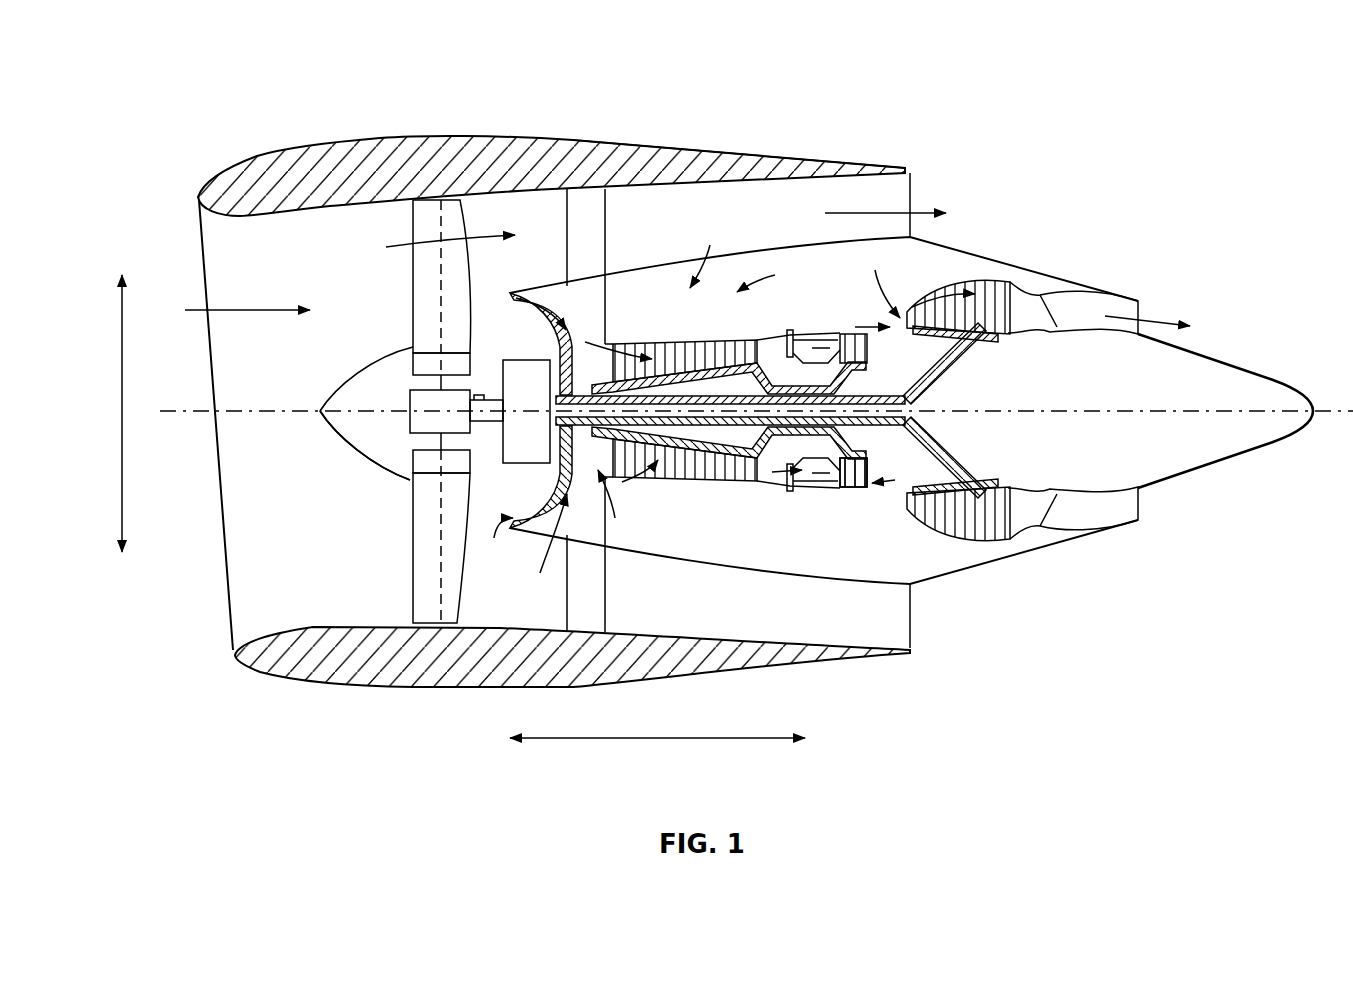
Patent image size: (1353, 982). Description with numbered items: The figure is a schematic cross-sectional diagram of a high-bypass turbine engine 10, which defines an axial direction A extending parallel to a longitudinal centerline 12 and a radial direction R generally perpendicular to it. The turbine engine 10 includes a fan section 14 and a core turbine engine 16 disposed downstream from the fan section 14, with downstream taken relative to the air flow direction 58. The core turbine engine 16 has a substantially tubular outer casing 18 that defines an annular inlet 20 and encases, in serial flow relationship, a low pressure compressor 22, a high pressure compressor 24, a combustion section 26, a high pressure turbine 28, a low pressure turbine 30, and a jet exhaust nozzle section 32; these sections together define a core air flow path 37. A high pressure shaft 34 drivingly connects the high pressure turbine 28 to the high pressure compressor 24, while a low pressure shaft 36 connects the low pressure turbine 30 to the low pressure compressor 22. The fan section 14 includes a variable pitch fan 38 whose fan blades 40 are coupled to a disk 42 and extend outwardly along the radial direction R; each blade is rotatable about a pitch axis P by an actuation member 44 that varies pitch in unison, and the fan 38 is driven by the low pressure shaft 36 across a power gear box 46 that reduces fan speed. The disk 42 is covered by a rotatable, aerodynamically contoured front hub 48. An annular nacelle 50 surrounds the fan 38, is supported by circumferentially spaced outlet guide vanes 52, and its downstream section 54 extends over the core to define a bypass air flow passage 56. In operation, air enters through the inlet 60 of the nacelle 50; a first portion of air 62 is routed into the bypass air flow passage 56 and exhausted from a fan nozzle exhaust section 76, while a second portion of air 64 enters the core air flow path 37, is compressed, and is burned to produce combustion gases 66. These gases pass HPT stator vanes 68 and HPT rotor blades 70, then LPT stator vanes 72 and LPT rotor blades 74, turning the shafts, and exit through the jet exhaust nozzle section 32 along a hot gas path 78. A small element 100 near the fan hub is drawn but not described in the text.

The turbine engine 10 is at (1077, 102).
The longitudinal centerline 12 is at (1053, 410).
The fan section 14 is at (321, 225).
The core turbine engine 16 is at (749, 251).
The outer casing 18 is at (737, 573).
The annular inlet 20 is at (494, 547).
The low pressure compressor 22 is at (544, 550).
The high pressure compressor 24 is at (657, 474).
The combustion section 26 is at (792, 480).
The high pressure turbine 28 is at (883, 487).
The low pressure turbine 30 is at (993, 540).
The jet exhaust nozzle section 32 is at (1050, 527).
The high pressure shaft 34 is at (876, 431).
The low pressure shaft 36 is at (887, 438).
The core air flow path 37 is at (620, 508).
The fan 38 is at (382, 470).
The fan blades 40 is at (413, 533).
The disk 42 is at (420, 358).
The actuation member 44 is at (410, 404).
The power gear box 46 is at (543, 372).
The front hub 48 is at (335, 433).
The nacelle 50 is at (418, 690).
The outlet guide vanes 52 is at (606, 234).
The downstream section 54 is at (866, 165).
The bypass air flow passage 56 is at (774, 232).
The air flow 58 is at (237, 308).
The inlet 60 is at (224, 582).
The first portion of air 62 is at (398, 246).
The second portion of air 64 is at (513, 292).
The combustion gases 66 is at (962, 290).
The HPT stator vanes 68 is at (826, 487).
The HPT rotor blades 70 is at (838, 488).
The LPT stator vanes 72 is at (912, 530).
The LPT rotor blades 74 is at (928, 527).
The fan nozzle exhaust section 76 is at (895, 197).
The hot gas path 78 is at (879, 278).
The sensor 100 is at (481, 396).
The pitch axis P is at (440, 226).
The radial direction R is at (122, 465).
The axial direction A is at (658, 737).